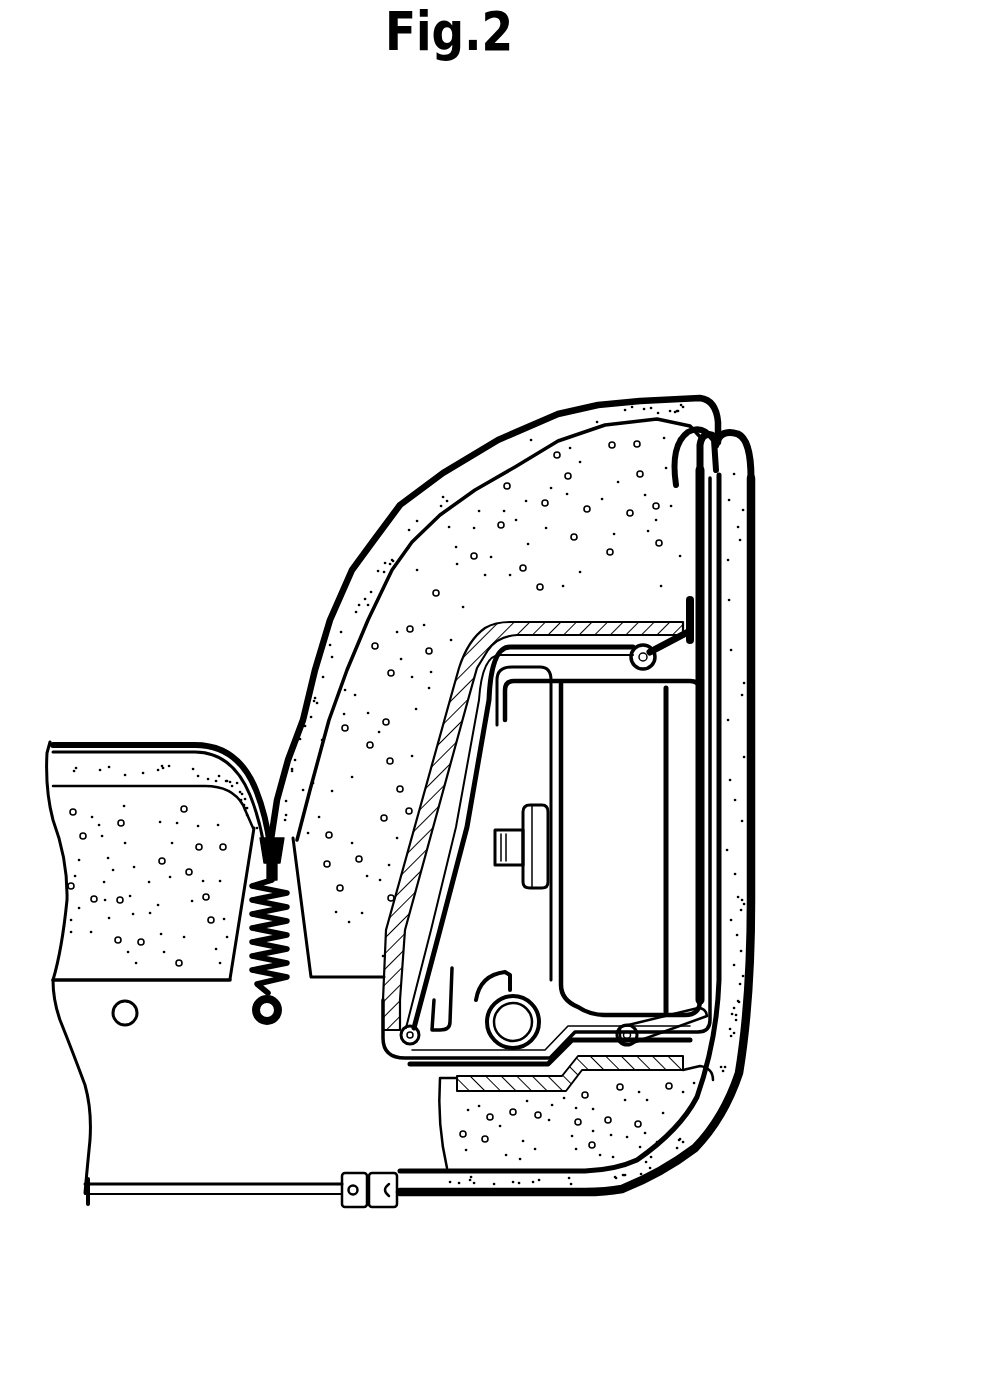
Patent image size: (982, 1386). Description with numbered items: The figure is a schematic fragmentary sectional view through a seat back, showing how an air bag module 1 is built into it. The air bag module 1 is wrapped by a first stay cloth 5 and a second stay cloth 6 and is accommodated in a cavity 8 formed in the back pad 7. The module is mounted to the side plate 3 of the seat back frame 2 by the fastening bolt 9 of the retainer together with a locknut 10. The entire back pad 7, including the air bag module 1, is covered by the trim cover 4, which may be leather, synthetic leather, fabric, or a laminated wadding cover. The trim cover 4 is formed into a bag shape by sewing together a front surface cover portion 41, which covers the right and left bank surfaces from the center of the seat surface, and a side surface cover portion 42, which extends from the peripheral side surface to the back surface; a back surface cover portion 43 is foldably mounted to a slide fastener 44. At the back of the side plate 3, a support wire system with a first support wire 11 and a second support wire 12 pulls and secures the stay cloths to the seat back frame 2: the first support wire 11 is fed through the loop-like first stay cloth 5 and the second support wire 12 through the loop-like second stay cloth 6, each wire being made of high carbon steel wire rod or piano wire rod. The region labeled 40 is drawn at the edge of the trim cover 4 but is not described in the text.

The air bag module 1 is at (680, 833).
The seat back frame 2 is at (560, 973).
The side plate 3 is at (462, 700).
The trim cover 4 is at (368, 544).
The first stay cloth 5 is at (668, 443).
The second stay cloth 6 is at (712, 667).
The back pad 7 is at (443, 1112).
The cavity 8 is at (688, 1052).
The fastening bolt 9 is at (493, 847).
The locknut 10 is at (535, 800).
The first support wire 11 is at (565, 710).
The second support wire 12 is at (588, 1047).
The trim fold 40 is at (723, 437).
The front surface cover portion 41 is at (447, 473).
The side surface cover portion 42 is at (750, 888).
The back surface cover portion 43 is at (177, 1195).
The slide fastener 44 is at (353, 1207).